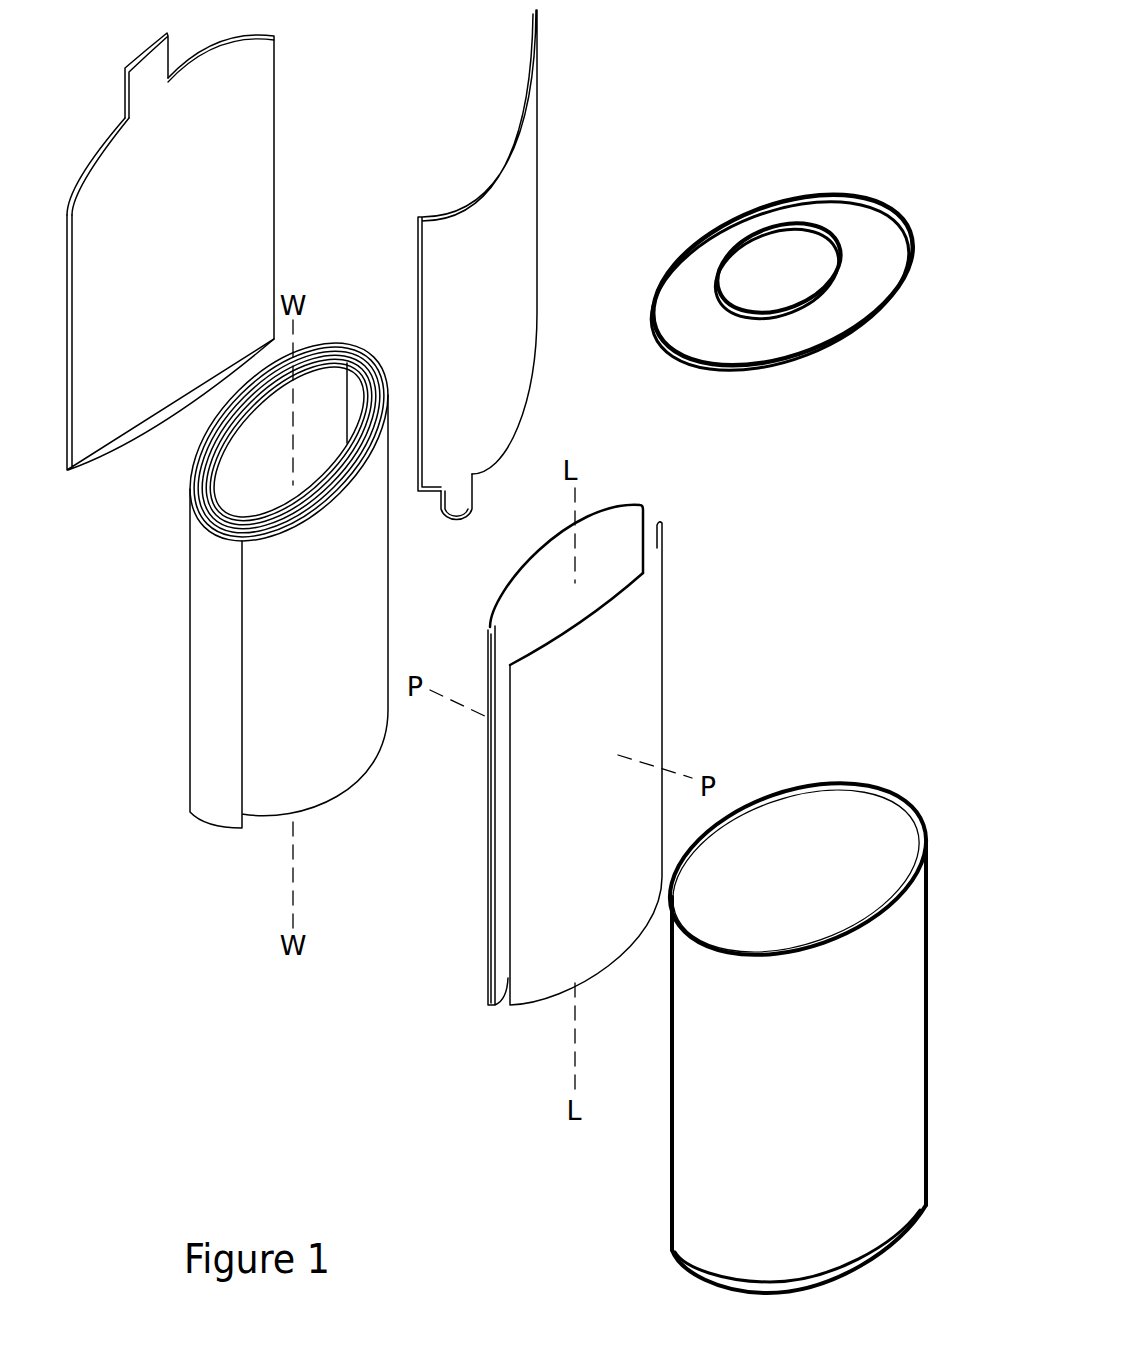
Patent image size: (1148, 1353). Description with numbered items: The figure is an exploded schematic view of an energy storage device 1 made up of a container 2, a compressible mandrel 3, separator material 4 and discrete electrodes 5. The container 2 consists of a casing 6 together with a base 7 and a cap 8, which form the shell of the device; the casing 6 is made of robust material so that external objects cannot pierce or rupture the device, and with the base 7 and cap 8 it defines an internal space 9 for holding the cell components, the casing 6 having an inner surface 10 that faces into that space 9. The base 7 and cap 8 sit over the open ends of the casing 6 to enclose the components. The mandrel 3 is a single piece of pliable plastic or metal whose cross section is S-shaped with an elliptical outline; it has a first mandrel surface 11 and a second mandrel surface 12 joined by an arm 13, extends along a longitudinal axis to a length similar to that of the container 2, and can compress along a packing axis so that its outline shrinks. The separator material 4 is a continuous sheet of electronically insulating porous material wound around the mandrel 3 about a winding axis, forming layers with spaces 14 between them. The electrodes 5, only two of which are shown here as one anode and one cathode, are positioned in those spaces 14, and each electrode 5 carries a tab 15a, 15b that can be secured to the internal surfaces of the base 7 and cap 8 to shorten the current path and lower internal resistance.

The energy storage device 1 is at (263, 1090).
The container 2 is at (767, 1015).
The compressible mandrel 3 is at (580, 689).
The separator material 4 is at (218, 740).
The discrete electrodes 5 is at (492, 178).
The casing 6 is at (670, 947).
The base 7 is at (675, 1263).
The cap 8 is at (832, 315).
The internal space 9 is at (803, 875).
The inner surface 10 is at (915, 812).
The first mandrel surface 11 is at (490, 755).
The second mandrel surface 12 is at (640, 655).
The arm 13 is at (613, 532).
The spaces 14 is at (200, 483).
The tab 15a is at (125, 76).
The tab 15b is at (438, 517).